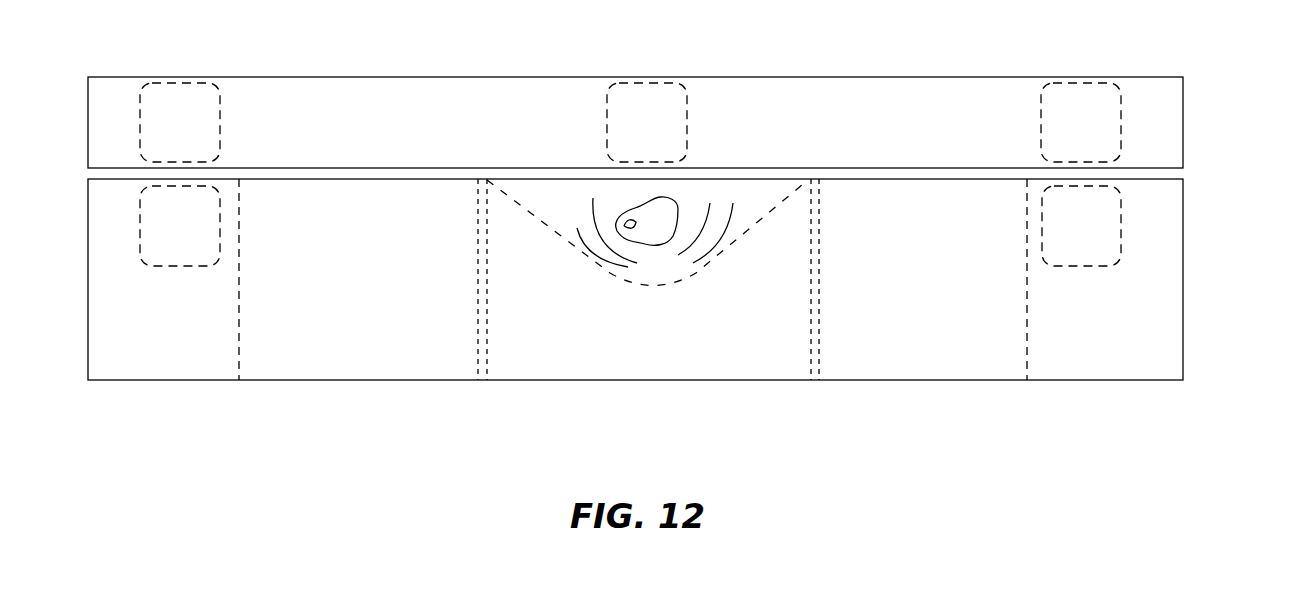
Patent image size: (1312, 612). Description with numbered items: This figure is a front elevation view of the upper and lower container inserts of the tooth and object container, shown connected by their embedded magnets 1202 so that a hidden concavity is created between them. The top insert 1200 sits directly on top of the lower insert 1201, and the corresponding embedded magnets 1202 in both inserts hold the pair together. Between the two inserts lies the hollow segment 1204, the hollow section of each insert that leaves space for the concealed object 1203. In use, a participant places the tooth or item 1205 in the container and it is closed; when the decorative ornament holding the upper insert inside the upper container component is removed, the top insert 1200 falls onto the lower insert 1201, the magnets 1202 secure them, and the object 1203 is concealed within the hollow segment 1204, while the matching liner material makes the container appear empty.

The top insert 1200 is at (1184, 118).
The lower insert 1201 is at (1183, 307).
The embedded magnets 1202 is at (1072, 92).
The object 1203 is at (653, 300).
The hollow segment 1204 is at (520, 352).
The tooth or item 1205 is at (640, 208).